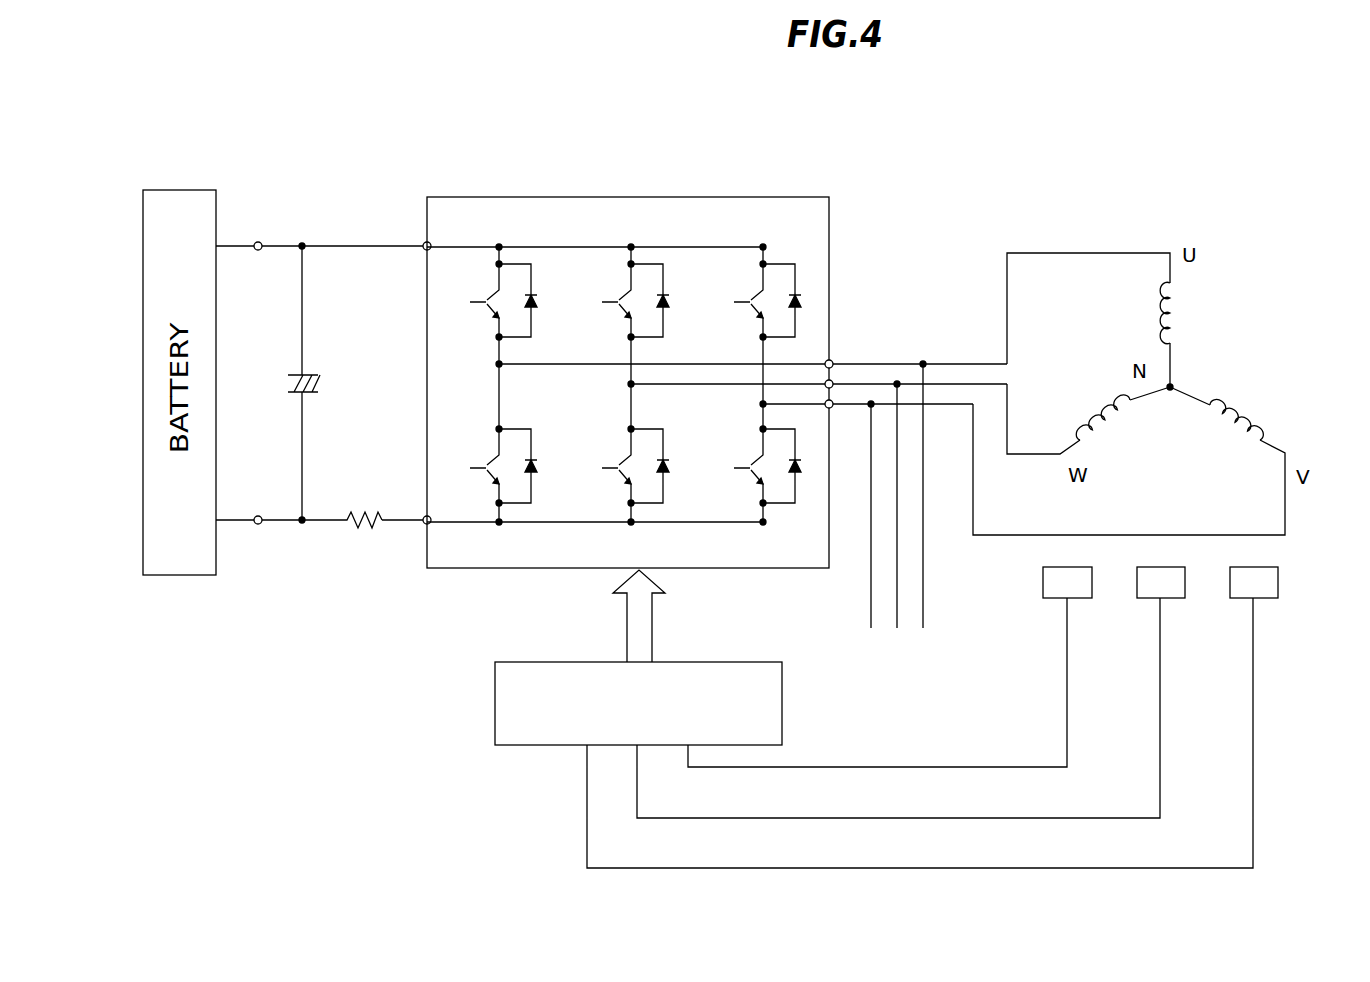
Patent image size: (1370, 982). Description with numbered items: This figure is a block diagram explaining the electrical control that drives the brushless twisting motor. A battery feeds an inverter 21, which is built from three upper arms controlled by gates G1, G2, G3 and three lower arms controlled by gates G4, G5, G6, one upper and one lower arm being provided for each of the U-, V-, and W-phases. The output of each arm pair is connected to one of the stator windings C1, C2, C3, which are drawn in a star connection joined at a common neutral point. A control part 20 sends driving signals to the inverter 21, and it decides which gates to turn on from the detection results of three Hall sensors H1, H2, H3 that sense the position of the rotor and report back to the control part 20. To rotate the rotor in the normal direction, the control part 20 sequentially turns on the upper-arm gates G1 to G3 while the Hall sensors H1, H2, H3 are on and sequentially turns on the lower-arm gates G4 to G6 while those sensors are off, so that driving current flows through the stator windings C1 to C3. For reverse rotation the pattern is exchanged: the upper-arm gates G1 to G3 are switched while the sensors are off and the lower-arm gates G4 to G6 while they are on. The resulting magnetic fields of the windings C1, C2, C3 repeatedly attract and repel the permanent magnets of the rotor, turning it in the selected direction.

The control part 20 is at (540, 733).
The inverter 21 is at (660, 197).
The gate of upper arm G1 is at (481, 300).
The gate of upper arm G2 is at (612, 300).
The gate of upper arm G3 is at (744, 300).
The gate of lower arm G4 is at (478, 470).
The gate of lower arm G5 is at (609, 470).
The gate of lower arm G6 is at (744, 470).
The stator winding C1 is at (1165, 322).
The stator winding C2 is at (1222, 418).
The stator winding C3 is at (1098, 415).
The Hall sensor H1 is at (1055, 590).
The Hall sensor H2 is at (1148, 590).
The Hall sensor H3 is at (1240, 590).